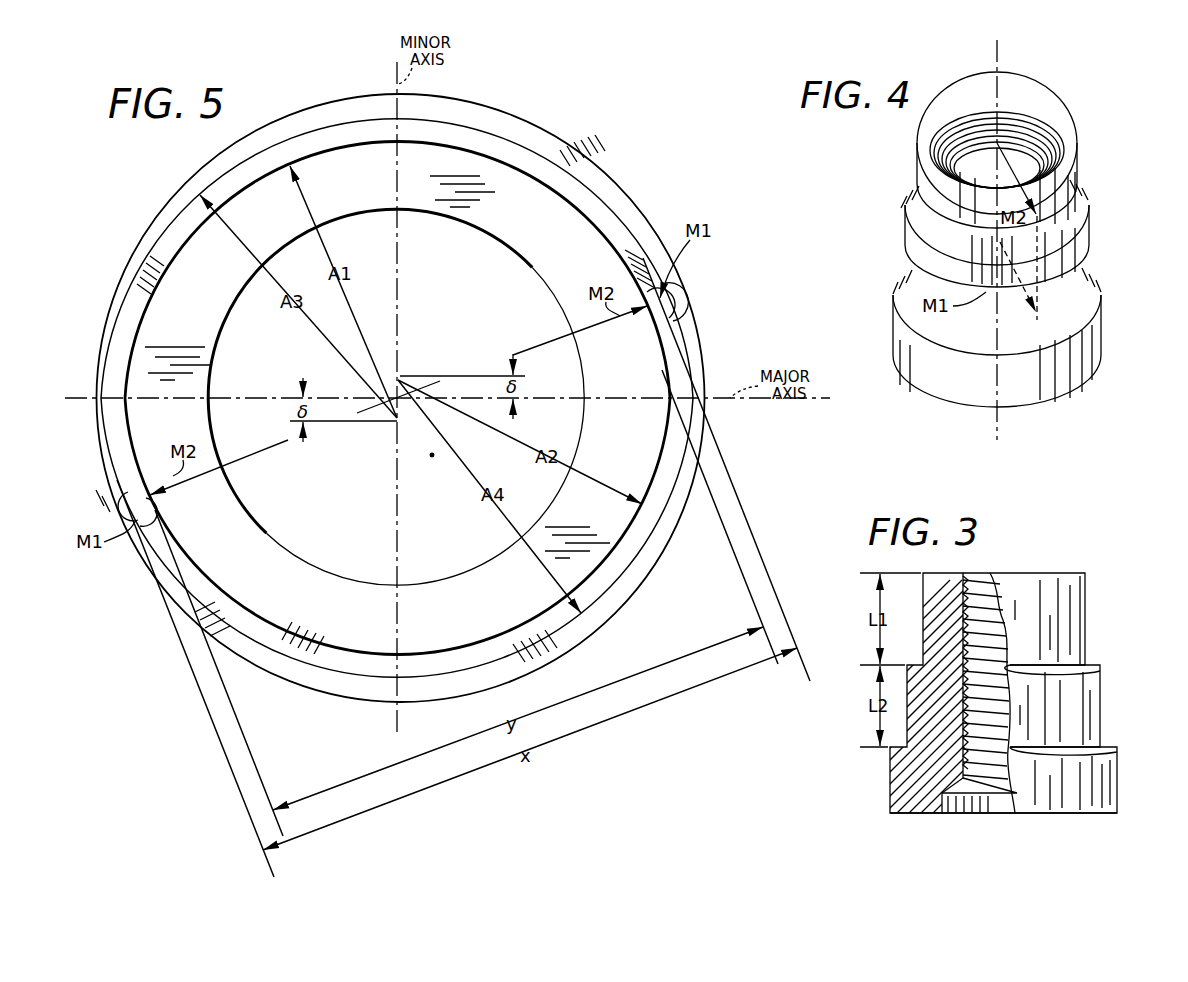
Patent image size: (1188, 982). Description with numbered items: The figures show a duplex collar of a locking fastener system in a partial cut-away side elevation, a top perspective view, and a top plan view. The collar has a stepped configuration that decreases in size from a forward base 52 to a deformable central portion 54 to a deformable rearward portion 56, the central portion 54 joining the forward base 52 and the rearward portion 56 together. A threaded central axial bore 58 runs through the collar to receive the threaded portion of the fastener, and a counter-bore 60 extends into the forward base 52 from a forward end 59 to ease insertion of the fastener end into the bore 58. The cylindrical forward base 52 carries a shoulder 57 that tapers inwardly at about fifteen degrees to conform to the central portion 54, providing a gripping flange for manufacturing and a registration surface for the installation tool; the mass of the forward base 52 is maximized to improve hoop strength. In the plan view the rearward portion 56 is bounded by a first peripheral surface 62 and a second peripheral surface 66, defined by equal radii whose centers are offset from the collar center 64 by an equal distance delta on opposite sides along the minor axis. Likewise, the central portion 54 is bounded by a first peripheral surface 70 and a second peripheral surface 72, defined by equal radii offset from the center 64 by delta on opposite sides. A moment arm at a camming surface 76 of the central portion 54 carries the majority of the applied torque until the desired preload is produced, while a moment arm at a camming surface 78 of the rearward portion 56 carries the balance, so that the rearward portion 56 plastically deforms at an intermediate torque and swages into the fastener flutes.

In FIG. 5, the forward base 52 is at (656, 214).
In FIG. 4, the forward base 52 is at (1084, 364).
In FIG. 3, the forward base 52 is at (1100, 796).
In FIG. 5, the deformable central portion 54 is at (558, 150).
In FIG. 4, the deformable central portion 54 is at (1082, 271).
In FIG. 3, the deformable central portion 54 is at (1085, 700).
In FIG. 5, the deformable rearward portion 56 is at (629, 208).
In FIG. 4, the deformable rearward portion 56 is at (1070, 196).
In FIG. 3, the deformable rearward portion 56 is at (1075, 590).
In FIG. 4, the shoulder 57 is at (1090, 312).
In FIG. 3, the shoulder 57 is at (1110, 747).
In FIG. 5, the threaded central axial bore 58 is at (488, 238).
In FIG. 4, the threaded central axial bore 58 is at (1034, 135).
In FIG. 3, the threaded central axial bore 58 is at (993, 600).
In FIG. 3, the forward end 59 is at (1066, 815).
In FIG. 3, the counter-bore 60 is at (986, 798).
In FIG. 5, the first peripheral surface 62 is at (343, 150).
In FIG. 5, the center 64 is at (401, 406).
In FIG. 5, the second peripheral surface 66 is at (655, 472).
In FIG. 5, the first peripheral surface 70 is at (237, 170).
In FIG. 5, the second peripheral surface 72 is at (608, 600).
In FIG. 5, the camming surface 76 is at (681, 290).
In FIG. 4, the camming surface 76 is at (1038, 279).
In FIG. 5, the camming surface 78 is at (675, 312).
In FIG. 4, the camming surface 78 is at (1032, 252).